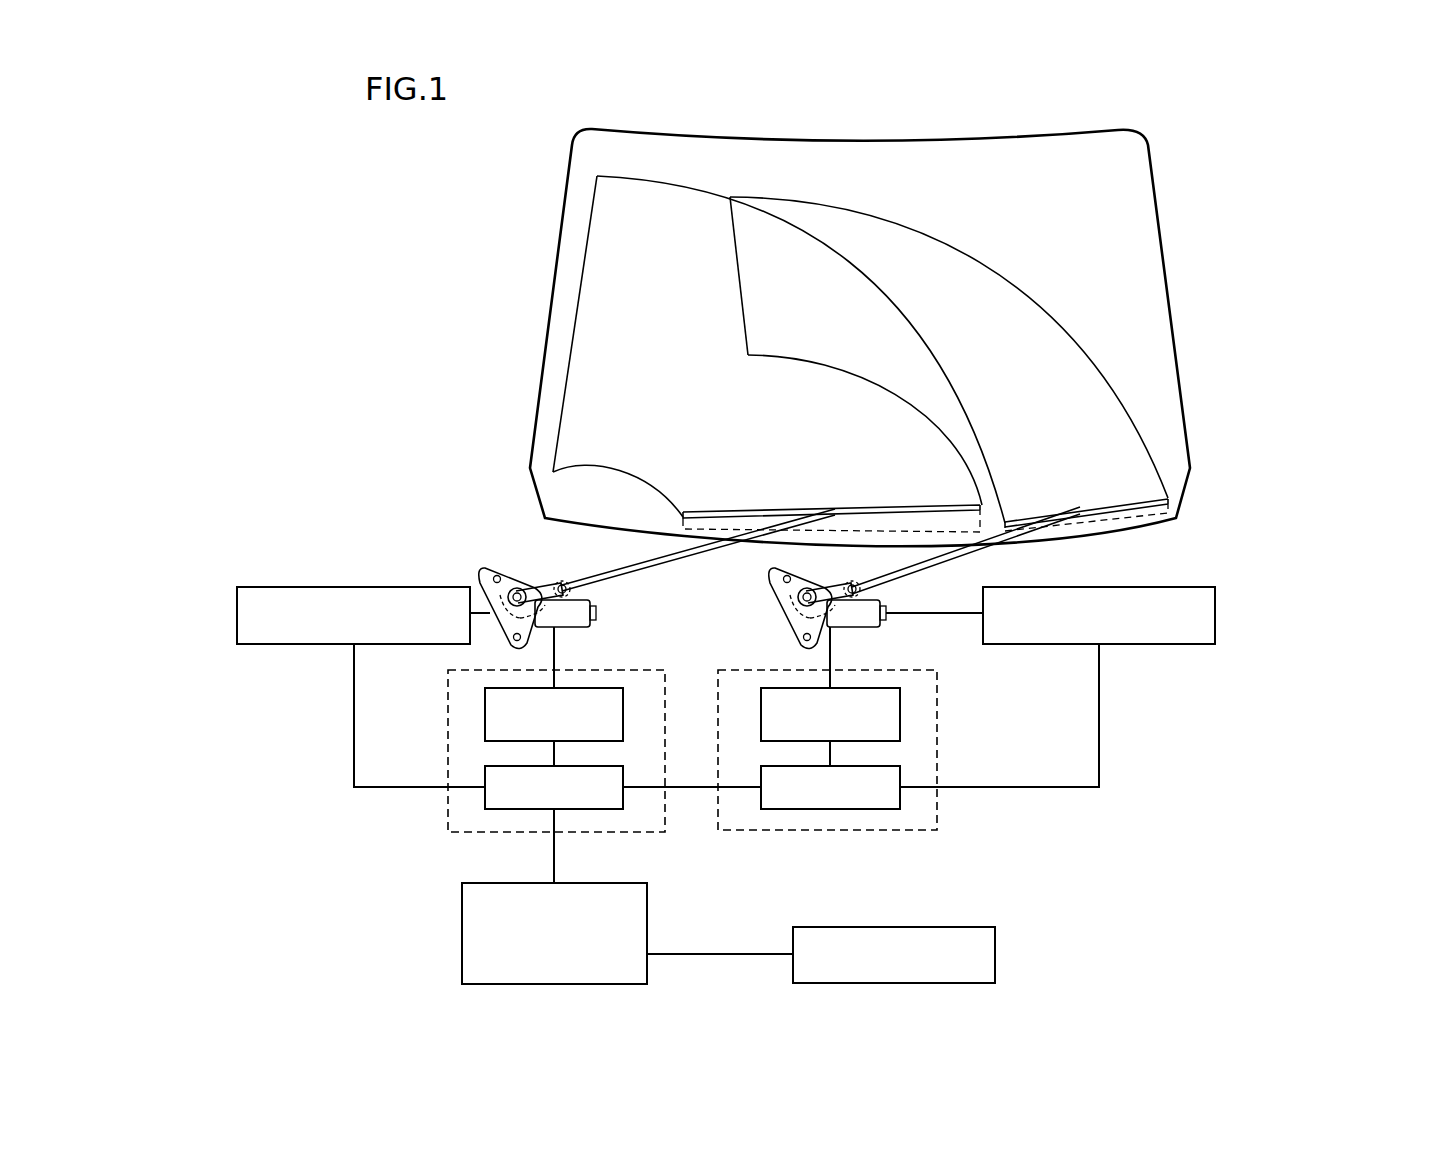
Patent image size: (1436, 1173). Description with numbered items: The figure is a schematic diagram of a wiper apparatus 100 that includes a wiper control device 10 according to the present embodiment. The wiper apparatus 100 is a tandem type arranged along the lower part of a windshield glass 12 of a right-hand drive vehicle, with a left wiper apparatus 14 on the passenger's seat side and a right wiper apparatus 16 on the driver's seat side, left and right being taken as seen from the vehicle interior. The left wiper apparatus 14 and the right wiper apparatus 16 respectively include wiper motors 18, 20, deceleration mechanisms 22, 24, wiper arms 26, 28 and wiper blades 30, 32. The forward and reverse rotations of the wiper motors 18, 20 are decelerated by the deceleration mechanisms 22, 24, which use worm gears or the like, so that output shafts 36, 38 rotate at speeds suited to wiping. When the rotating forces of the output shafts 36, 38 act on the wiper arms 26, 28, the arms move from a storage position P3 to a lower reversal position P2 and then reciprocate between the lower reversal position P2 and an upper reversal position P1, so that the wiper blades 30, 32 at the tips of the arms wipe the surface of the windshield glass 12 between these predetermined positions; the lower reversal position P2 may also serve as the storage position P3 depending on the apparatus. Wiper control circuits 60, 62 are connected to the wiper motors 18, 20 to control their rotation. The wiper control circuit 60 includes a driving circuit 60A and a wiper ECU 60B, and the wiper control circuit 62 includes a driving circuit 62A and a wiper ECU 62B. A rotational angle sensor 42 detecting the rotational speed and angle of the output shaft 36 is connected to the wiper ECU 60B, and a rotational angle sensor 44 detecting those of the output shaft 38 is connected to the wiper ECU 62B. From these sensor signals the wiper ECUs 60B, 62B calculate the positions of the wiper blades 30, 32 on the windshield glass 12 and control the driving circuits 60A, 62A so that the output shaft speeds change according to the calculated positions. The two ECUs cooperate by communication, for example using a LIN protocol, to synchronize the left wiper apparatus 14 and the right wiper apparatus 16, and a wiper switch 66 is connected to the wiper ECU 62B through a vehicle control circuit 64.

The wiper apparatus 100 is at (1246, 138).
The windshield glass 12 is at (840, 140).
The wiper control device 10 is at (1258, 777).
The left wiper apparatus 14 is at (908, 637).
The right wiper apparatus 16 is at (466, 542).
The wiper motor 18 is at (860, 630).
The wiper motor 20 is at (588, 628).
The deceleration mechanism 22 is at (785, 614).
The deceleration mechanism 24 is at (528, 582).
The wiper arm 26 is at (970, 556).
The wiper arm 28 is at (712, 555).
The wiper blade 30 is at (1122, 508).
The wiper blade 32 is at (869, 511).
The output shaft 36 is at (800, 622).
The output shaft 38 is at (507, 573).
The rotational angle sensor 42 is at (1215, 613).
The rotational angle sensor 44 is at (316, 587).
The wiper control circuit 60 is at (912, 832).
The driving circuit 60A is at (900, 706).
The wiper ECU 60B is at (900, 769).
The wiper control circuit 62 is at (465, 839).
The driving circuit 62A is at (485, 706).
The wiper ECU 62B is at (485, 770).
The vehicle control circuit 64 is at (647, 906).
The wiper switch 66 is at (995, 954).
The upper reversal position P1 is at (597, 176).
The lower reversal position P2 is at (735, 518).
The storage position P3 is at (1178, 524).